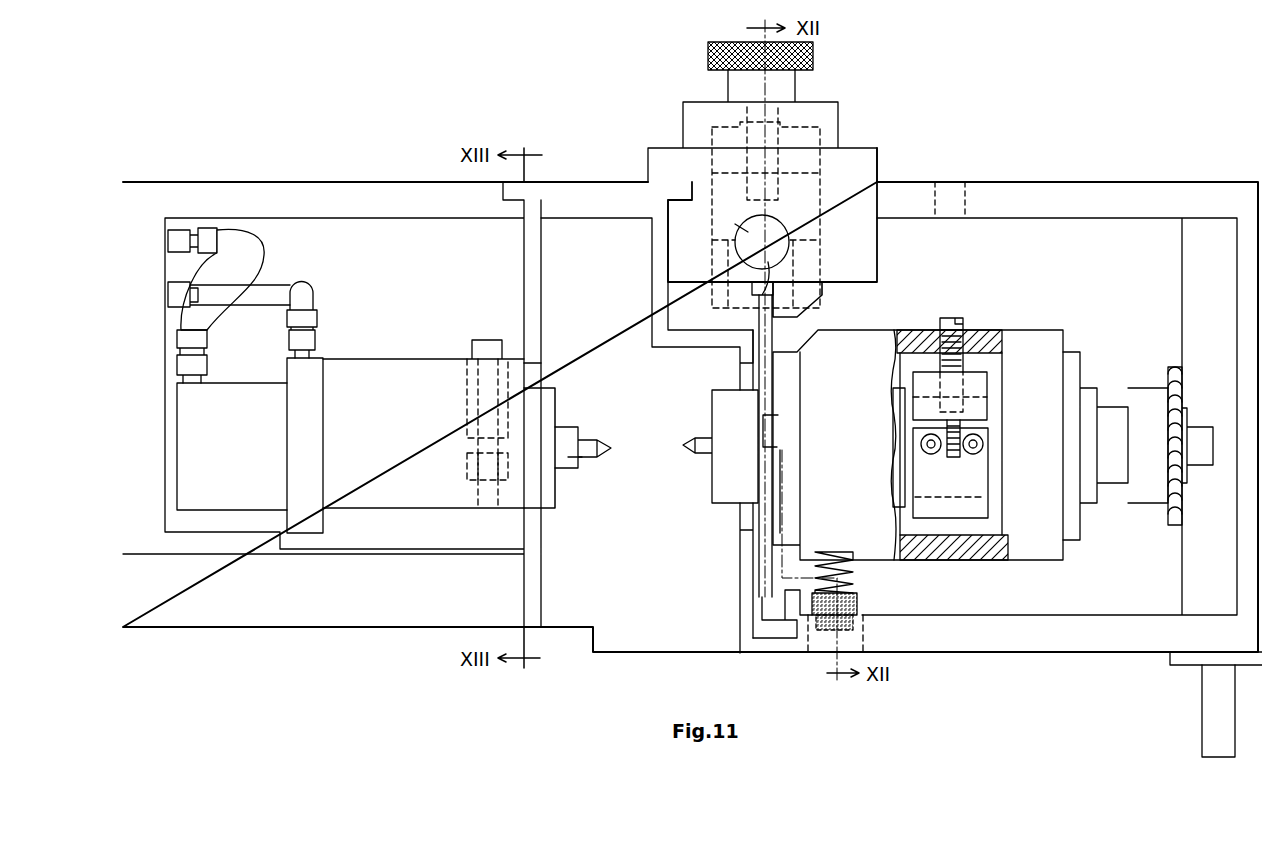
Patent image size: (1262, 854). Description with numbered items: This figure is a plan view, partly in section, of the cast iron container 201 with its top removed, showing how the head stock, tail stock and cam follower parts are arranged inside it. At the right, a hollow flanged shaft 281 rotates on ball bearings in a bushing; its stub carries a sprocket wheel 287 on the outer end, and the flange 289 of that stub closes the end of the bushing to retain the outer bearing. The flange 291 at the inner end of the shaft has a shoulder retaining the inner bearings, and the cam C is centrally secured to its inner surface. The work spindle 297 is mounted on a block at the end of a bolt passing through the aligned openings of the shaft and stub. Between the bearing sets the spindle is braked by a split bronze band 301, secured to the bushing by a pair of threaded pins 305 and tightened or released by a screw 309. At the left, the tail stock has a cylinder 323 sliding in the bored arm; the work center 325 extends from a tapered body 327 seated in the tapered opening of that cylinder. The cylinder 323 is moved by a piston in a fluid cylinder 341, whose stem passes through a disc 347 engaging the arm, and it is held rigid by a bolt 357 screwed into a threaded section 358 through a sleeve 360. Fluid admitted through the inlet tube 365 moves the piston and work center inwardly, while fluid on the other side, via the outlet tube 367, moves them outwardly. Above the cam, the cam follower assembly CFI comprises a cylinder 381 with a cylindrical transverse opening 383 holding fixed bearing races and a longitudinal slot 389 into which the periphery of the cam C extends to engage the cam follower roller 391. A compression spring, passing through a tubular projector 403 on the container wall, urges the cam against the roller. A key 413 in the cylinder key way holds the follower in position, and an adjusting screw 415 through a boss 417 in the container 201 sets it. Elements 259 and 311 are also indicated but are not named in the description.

The container 201 is at (252, 184).
The leg 259 is at (1210, 708).
The hollow flanged shaft 281 is at (996, 492).
The sprocket wheel 287 is at (1175, 520).
The flange 289 is at (1073, 532).
The flange 291 is at (790, 528).
The work spindle 297 is at (690, 446).
The bronze band 301 is at (980, 485).
The pins 305 is at (975, 440).
The screw 309 is at (958, 327).
The opening 311 is at (940, 190).
The cylinder 323 is at (548, 515).
The work center 325 is at (608, 415).
The tapered body 327 is at (566, 470).
The cylinder 341 is at (252, 500).
The disc 347 is at (313, 478).
The bolt 357 is at (497, 320).
The threaded section 358 is at (467, 467).
The sleeve 360 is at (470, 380).
The inlet tube 365 is at (266, 246).
The outlet tube 367 is at (305, 290).
The cylinder 381 is at (808, 206).
The cylindrical transverse opening 383 is at (786, 273).
The slot 389 is at (773, 317).
The cam follower roller 391 is at (762, 255).
The tubular projector 403 is at (860, 610).
The key 413 is at (730, 216).
The adjusting screw 415 is at (772, 167).
The boss 417 is at (812, 107).
The cam follower assembly CFI is at (868, 233).
The cam C is at (777, 446).